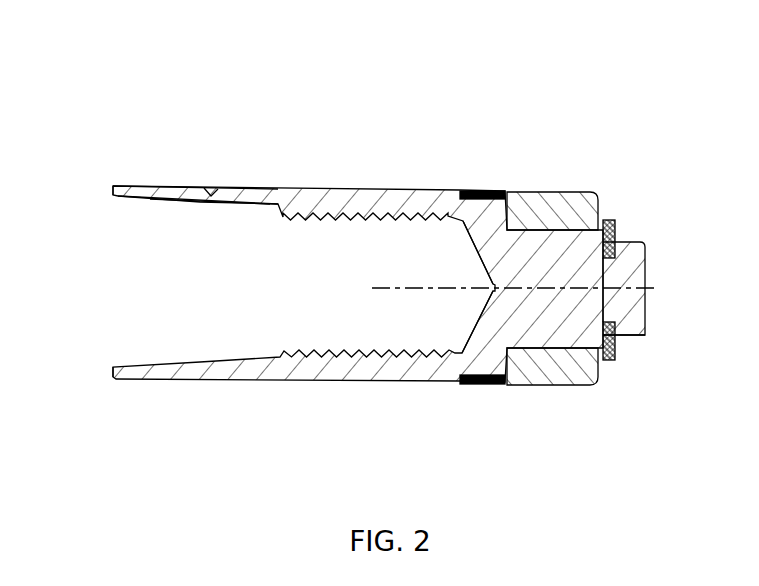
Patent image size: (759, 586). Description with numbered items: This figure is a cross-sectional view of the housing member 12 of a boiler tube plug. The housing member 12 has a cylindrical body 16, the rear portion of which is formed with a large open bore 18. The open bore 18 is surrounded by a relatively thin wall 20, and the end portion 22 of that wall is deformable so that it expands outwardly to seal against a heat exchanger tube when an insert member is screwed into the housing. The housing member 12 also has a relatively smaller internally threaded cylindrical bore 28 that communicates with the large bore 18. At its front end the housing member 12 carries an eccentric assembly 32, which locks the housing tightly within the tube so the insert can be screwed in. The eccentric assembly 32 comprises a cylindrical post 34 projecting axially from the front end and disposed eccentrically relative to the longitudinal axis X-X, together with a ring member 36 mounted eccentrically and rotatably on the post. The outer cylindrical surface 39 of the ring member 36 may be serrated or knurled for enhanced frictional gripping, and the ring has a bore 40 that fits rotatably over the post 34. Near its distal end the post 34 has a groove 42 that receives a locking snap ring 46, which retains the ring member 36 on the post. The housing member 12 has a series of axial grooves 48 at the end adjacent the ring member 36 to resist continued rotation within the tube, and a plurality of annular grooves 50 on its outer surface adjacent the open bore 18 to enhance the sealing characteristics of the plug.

The housing member 12 is at (358, 203).
The cylindrical body 16 is at (401, 190).
The open bore 18 is at (110, 293).
The thin wall 20 is at (210, 203).
The end portion 22 is at (152, 187).
The internally threaded cylindrical bore 28 is at (318, 290).
The eccentric assembly 32 is at (627, 352).
The cylindrical post 34 is at (648, 266).
The ring member 36 is at (560, 386).
The outer cylindrical surface 39 is at (570, 190).
The bore 40 is at (578, 240).
The groove 42 is at (608, 321).
The locking snap ring 46 is at (611, 220).
The axial grooves 48 is at (477, 191).
The annular grooves 50 is at (212, 180).